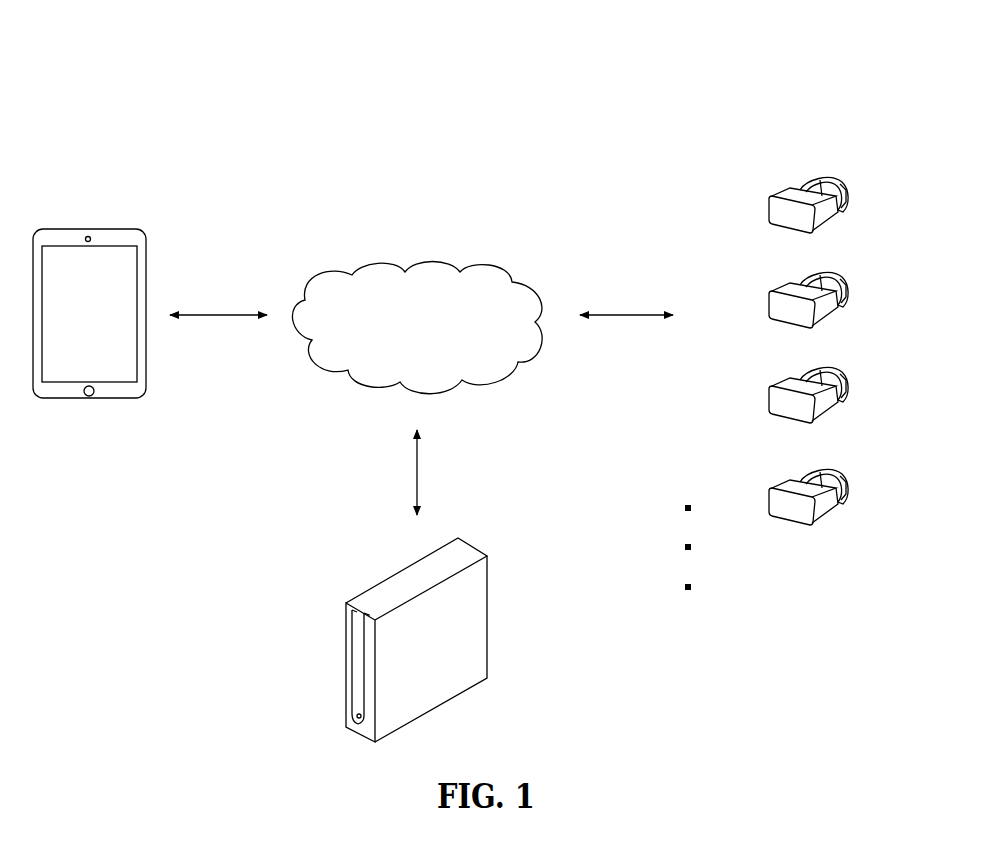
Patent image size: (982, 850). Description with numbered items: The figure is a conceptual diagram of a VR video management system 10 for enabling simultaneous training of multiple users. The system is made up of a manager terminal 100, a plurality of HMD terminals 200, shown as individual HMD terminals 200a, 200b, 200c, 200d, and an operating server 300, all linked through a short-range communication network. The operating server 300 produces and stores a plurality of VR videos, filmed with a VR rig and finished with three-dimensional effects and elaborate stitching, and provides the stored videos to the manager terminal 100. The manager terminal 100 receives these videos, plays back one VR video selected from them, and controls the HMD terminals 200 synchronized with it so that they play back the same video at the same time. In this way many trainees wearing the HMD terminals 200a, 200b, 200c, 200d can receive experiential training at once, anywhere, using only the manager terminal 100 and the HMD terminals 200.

The VR video management system 10 is at (175, 42).
The manager terminal 100 is at (89, 229).
The HMD terminals 200 is at (799, 363).
The HMD terminal 200a is at (778, 209).
The HMD terminal 200b is at (778, 302).
The HMD terminal 200c is at (778, 403).
The HMD terminal 200d is at (778, 505).
The operating server 300 is at (469, 640).